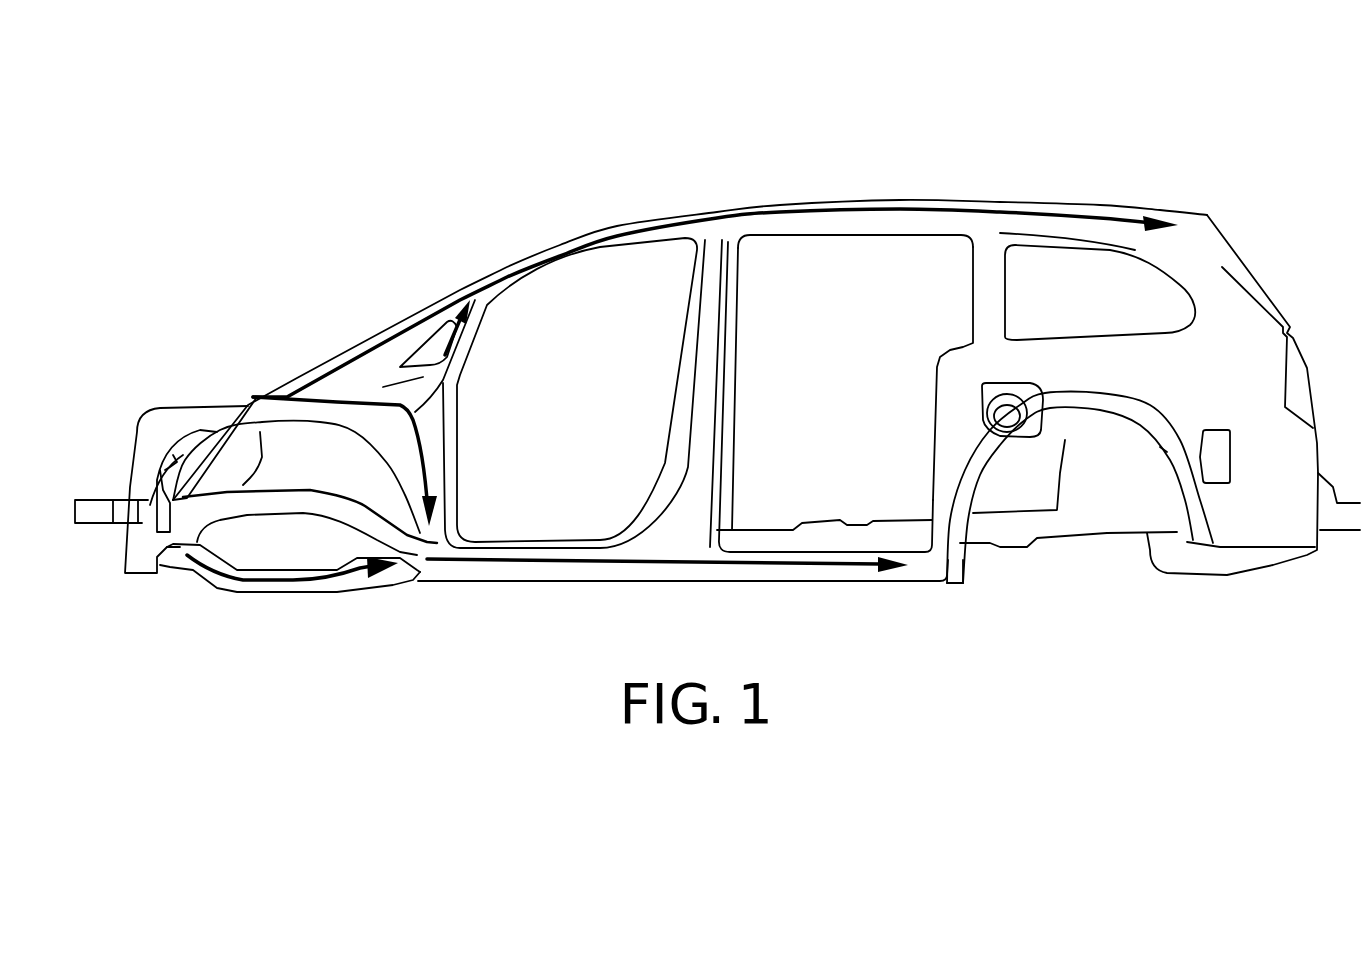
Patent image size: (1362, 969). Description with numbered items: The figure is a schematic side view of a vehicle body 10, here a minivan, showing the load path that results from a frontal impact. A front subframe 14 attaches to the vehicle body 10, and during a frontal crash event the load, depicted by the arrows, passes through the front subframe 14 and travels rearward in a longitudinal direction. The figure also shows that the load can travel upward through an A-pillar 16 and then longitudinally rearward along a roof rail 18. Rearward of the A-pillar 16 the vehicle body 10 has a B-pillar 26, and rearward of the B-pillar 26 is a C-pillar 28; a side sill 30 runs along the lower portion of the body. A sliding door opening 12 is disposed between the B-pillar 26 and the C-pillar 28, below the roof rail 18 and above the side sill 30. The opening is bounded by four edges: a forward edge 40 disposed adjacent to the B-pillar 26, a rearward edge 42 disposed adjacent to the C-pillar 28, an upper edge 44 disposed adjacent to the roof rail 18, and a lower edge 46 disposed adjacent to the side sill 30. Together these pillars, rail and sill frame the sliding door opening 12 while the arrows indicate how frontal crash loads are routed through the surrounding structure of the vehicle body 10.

The vehicle body 10 is at (995, 97).
The sliding door opening 12 is at (842, 383).
The front subframe 14 is at (236, 612).
The A-pillar 16 is at (468, 347).
The roof rail 18 is at (830, 222).
The B-pillar 26 is at (705, 321).
The C-pillar 28 is at (993, 296).
The side sill 30 is at (820, 572).
The forward edge 40 is at (732, 327).
The rearward edge 42 is at (973, 295).
The upper edge 44 is at (840, 237).
The lower edge 46 is at (817, 550).